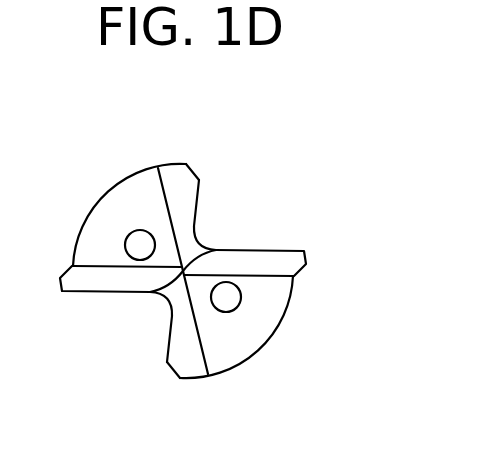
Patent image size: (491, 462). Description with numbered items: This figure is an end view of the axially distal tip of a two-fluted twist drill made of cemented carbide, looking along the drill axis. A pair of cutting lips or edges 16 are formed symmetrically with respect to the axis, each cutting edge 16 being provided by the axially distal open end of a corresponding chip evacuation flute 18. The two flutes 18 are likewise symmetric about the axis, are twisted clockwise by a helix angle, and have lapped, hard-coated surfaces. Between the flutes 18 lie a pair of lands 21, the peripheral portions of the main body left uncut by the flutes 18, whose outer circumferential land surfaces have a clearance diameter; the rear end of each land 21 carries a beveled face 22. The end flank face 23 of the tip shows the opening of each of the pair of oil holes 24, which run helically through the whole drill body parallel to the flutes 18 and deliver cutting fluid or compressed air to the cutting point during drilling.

The cutting lips or edges 16 is at (258, 249).
The chip evacuation flutes 18 is at (196, 221).
The lands 21 is at (107, 192).
The beveled face 22 is at (191, 169).
The end flank face 23 is at (88, 248).
The oil holes 24 is at (128, 250).